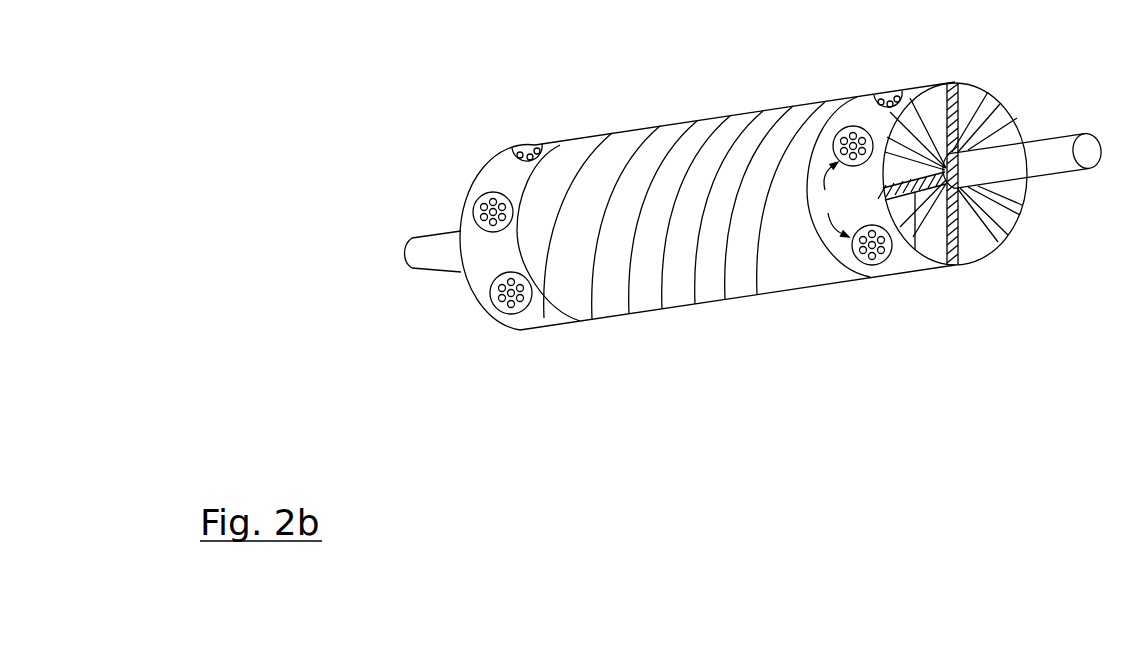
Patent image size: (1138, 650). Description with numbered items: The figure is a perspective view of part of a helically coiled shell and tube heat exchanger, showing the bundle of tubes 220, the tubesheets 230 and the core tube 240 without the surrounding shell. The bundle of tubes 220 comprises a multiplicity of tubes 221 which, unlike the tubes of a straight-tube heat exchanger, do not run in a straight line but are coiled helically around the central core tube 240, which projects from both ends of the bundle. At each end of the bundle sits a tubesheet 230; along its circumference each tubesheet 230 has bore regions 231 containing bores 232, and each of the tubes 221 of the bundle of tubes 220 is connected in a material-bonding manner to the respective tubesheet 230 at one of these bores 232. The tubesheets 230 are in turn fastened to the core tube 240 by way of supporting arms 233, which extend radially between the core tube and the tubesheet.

The bundle of tubes 220 is at (627, 113).
The tubes 221 is at (768, 278).
The tubesheets 230 is at (542, 320).
The bore regions 231 is at (845, 199).
The bores 232 is at (840, 137).
The supporting arms 233 is at (915, 248).
The core tube 240 is at (430, 257).